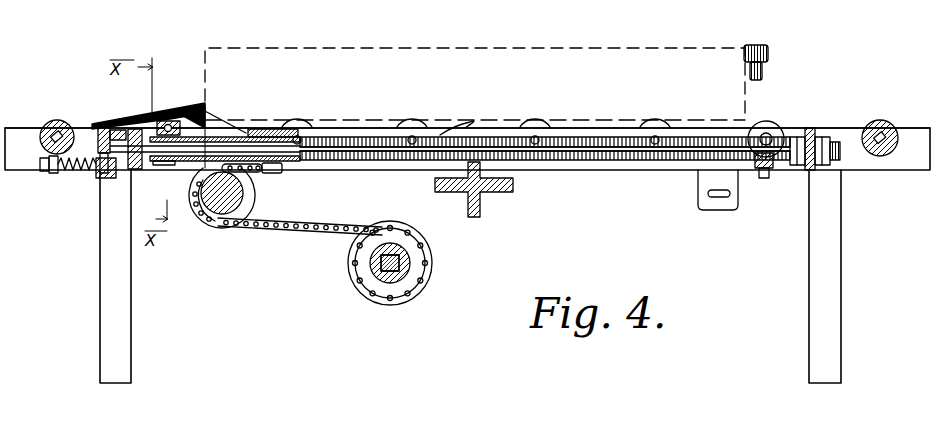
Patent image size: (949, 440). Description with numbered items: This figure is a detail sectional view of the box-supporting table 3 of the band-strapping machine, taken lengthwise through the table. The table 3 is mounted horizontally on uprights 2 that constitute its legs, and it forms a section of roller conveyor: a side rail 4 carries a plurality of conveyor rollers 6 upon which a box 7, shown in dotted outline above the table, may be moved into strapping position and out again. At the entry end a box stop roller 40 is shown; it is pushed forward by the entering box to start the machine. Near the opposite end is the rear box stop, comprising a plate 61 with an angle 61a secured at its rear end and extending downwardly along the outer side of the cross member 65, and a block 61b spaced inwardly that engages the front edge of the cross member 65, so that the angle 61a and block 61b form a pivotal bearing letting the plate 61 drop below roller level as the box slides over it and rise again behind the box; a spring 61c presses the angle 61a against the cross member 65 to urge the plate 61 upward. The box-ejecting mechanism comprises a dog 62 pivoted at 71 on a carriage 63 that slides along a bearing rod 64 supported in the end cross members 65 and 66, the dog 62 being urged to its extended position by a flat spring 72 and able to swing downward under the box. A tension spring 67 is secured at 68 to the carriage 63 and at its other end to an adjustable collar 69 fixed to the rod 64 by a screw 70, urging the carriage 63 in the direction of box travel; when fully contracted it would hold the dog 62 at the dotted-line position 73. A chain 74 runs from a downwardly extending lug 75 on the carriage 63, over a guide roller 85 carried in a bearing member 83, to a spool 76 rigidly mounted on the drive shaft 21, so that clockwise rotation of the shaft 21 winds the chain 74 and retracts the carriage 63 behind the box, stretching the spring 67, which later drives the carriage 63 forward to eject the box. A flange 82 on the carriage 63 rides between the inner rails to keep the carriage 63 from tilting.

The uprights 2 is at (128, 341).
The box-supporting table 3 is at (864, 174).
The side rail 4 is at (853, 126).
The conveyor rollers 6 is at (46, 122).
The box 7 is at (652, 50).
The drive shaft 21 is at (406, 263).
The box stop roller 40 is at (770, 54).
The plate 61 is at (168, 118).
The angle 61a is at (83, 128).
The block 61b is at (122, 128).
The spring 61c is at (70, 173).
The dog 62 is at (202, 114).
The carriage 63 is at (167, 168).
The bearing rod 64 is at (118, 176).
The cross member 65 is at (118, 180).
The cross member 66 is at (800, 173).
The tension spring 67 is at (556, 161).
The spring attachment point 68 is at (296, 166).
The adjustable collar 69 is at (748, 134).
The screw 70 is at (764, 179).
The pivot 71 is at (156, 108).
The flat spring 72 is at (222, 130).
The dotted lines 73 is at (452, 126).
The chain 74 is at (300, 234).
The lug 75 is at (263, 173).
The spool 76 is at (349, 277).
The flange 82 is at (158, 153).
The bearing member 83 is at (216, 232).
The guide roller 85 is at (244, 212).